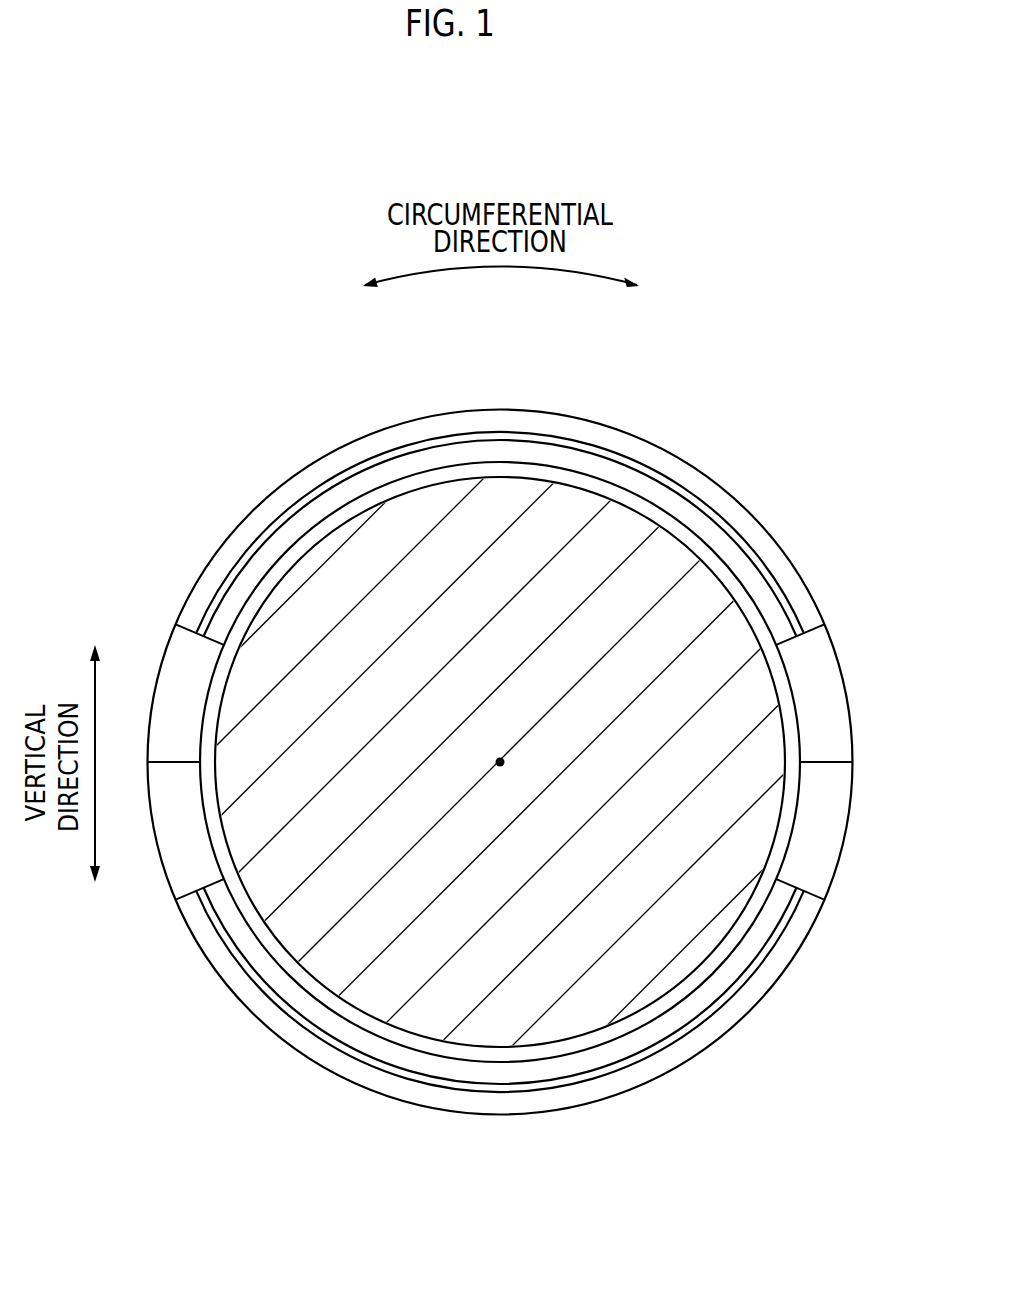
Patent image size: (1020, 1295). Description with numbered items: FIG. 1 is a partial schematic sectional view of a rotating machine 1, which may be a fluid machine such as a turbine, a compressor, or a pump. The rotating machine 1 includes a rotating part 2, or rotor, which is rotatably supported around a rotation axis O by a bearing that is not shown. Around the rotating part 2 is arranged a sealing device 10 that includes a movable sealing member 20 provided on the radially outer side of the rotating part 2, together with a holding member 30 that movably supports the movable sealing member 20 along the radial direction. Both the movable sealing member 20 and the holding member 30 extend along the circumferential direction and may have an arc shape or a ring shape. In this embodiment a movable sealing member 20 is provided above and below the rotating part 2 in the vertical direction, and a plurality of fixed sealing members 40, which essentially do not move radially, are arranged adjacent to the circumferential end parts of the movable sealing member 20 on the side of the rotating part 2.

The rotating machine 1 is at (808, 273).
The rotating part 2 is at (495, 1020).
The sealing device 10 is at (828, 550).
The movable sealing member 20 is at (275, 548).
The holding member 30 is at (352, 457).
The fixed sealing member 40 is at (180, 678).
The rotation axis O is at (503, 760).